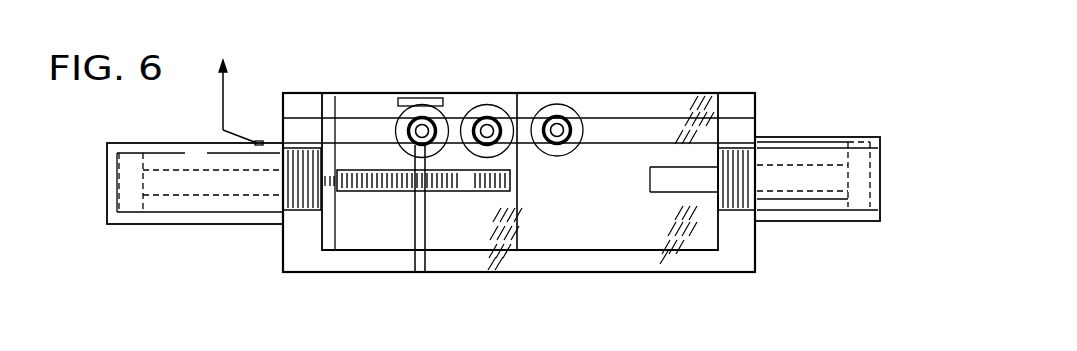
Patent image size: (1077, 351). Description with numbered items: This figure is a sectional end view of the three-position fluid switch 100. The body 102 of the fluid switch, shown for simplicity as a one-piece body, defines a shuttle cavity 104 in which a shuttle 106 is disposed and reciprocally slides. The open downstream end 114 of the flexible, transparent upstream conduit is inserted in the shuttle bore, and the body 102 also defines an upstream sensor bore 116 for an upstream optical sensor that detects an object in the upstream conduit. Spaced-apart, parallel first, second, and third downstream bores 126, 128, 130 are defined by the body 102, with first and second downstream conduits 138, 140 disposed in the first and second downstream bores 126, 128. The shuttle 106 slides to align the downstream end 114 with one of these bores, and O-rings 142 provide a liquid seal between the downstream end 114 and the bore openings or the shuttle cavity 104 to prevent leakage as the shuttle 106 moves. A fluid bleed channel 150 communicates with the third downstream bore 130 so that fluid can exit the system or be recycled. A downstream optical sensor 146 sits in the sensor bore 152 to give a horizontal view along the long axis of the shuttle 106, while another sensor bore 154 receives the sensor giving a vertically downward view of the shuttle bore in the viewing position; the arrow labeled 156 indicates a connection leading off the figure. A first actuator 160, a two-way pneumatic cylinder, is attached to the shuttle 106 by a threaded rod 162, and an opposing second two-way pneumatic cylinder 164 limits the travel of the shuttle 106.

The three-position fluid switch 100 is at (724, 48).
The body 102 is at (745, 90).
The shuttle cavity 104 is at (590, 250).
The shuttle 106 is at (517, 210).
The open downstream end 114 is at (436, 112).
The upstream sensor bore 116 is at (660, 123).
The first downstream bore 126 is at (558, 117).
The second downstream bore 128 is at (496, 116).
The third downstream bore 130 is at (417, 114).
The first downstream conduit 138 is at (579, 131).
The second downstream conduit 140 is at (474, 152).
The O-rings 142 is at (404, 152).
The downstream optical sensor 146 is at (265, 141).
The fluid bleed channel 150 is at (426, 232).
The sensor bore 152 is at (358, 122).
The sensor bore 154 is at (411, 114).
The controller connection 156 is at (231, 86).
The first actuator 160 is at (181, 142).
The threaded rod 162 is at (352, 192).
The second two-way pneumatic cylinder 164 is at (797, 137).